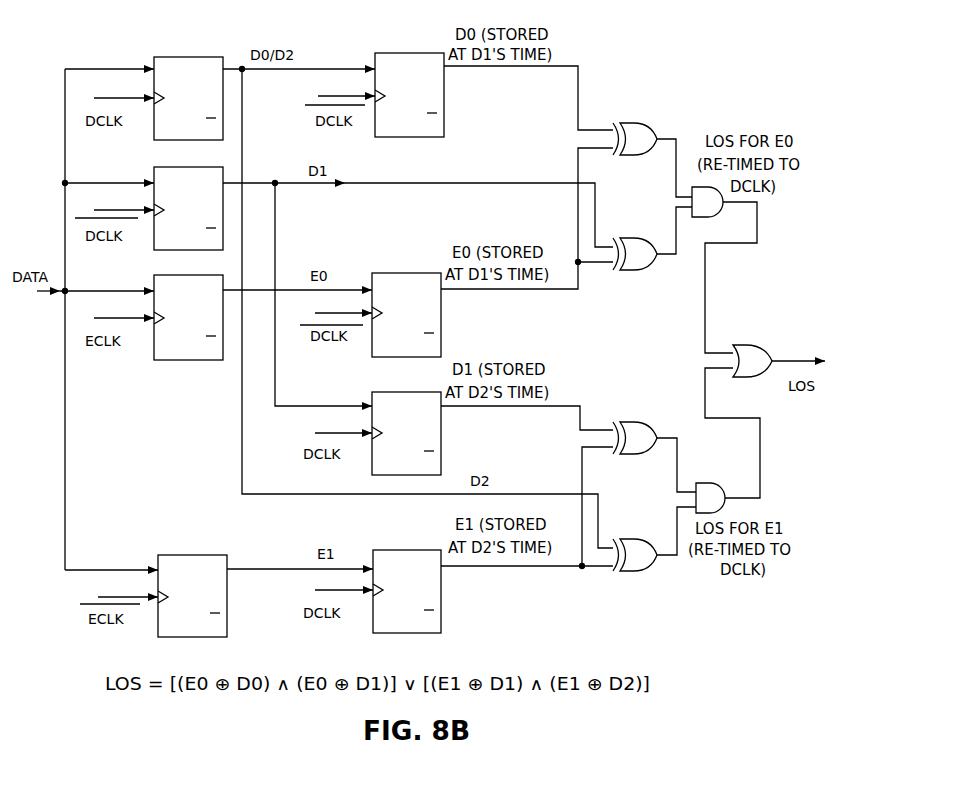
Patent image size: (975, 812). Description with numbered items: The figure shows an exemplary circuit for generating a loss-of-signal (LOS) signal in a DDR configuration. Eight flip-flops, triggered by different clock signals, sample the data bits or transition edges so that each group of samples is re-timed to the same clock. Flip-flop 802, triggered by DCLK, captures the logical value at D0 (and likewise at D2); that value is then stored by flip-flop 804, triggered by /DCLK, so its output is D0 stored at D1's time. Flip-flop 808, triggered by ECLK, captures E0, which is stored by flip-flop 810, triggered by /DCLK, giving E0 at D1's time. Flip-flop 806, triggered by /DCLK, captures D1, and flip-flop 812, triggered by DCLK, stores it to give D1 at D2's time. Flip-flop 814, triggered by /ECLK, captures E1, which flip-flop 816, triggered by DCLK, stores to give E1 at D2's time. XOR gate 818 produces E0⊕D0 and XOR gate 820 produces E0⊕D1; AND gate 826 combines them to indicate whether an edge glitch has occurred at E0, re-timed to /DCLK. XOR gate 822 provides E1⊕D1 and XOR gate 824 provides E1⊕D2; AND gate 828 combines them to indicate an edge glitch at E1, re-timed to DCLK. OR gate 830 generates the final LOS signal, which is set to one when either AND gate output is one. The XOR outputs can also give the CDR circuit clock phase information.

The flip-flop 802 is at (203, 106).
The flip-flop 804 is at (424, 104).
The flip-flop 806 is at (203, 218).
The flip-flop 808 is at (203, 326).
The flip-flop 810 is at (421, 321).
The flip-flop 812 is at (421, 441).
The flip-flop 814 is at (207, 605).
The flip-flop 816 is at (422, 598).
The XOR gate 818 is at (636, 123).
The XOR gate 820 is at (636, 238).
The XOR gate 822 is at (636, 423).
The XOR gate 824 is at (636, 540).
The AND gate 826 is at (719, 213).
The AND gate 828 is at (706, 483).
The OR gate 830 is at (745, 345).